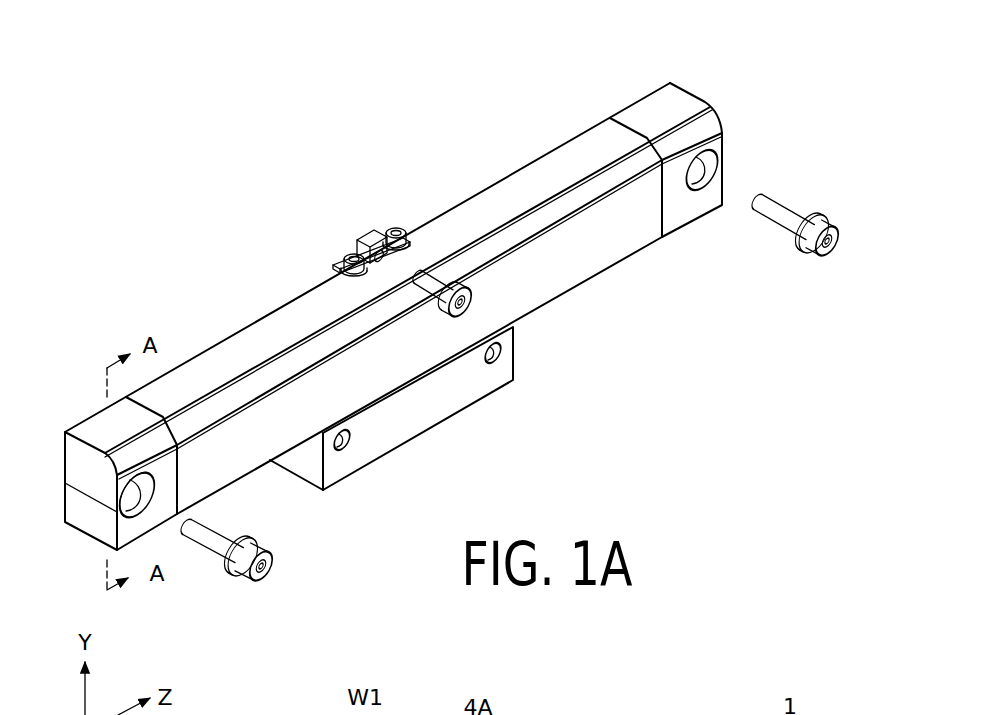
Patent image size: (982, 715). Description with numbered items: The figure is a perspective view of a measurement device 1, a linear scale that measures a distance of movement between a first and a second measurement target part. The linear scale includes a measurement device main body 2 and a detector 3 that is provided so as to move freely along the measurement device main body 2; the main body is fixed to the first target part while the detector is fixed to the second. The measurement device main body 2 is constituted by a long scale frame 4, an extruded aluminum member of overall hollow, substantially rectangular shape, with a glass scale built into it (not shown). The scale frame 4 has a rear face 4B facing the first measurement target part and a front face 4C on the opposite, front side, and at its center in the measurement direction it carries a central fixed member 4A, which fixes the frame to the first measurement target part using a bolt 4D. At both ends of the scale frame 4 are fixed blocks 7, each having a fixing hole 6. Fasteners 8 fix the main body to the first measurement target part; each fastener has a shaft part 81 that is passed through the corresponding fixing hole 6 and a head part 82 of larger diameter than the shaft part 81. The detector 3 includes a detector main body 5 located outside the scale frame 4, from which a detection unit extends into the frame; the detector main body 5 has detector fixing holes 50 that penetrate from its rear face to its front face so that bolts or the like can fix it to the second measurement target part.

The measurement device 1 is at (461, 337).
The measurement device main body 2 is at (425, 316).
The detector 3 is at (422, 436).
The scale frame 4 is at (425, 316).
The central fixed member 4A is at (368, 236).
The rear face 4B is at (280, 306).
The front face 4C is at (606, 253).
The bolt 4D is at (486, 292).
The detector main body 5 is at (422, 436).
The detector fixing holes 50 is at (506, 351).
The fixing hole 6 is at (152, 484).
The fixed blocks 7 is at (86, 430).
The fasteners 8 is at (523, 410).
The shaft part 81 is at (226, 541).
The head part 82 is at (261, 549).